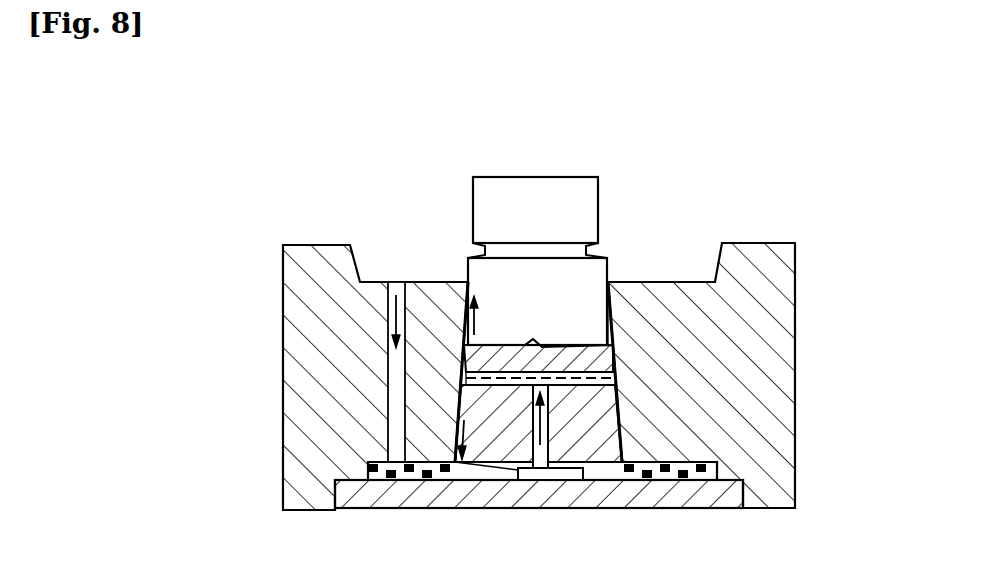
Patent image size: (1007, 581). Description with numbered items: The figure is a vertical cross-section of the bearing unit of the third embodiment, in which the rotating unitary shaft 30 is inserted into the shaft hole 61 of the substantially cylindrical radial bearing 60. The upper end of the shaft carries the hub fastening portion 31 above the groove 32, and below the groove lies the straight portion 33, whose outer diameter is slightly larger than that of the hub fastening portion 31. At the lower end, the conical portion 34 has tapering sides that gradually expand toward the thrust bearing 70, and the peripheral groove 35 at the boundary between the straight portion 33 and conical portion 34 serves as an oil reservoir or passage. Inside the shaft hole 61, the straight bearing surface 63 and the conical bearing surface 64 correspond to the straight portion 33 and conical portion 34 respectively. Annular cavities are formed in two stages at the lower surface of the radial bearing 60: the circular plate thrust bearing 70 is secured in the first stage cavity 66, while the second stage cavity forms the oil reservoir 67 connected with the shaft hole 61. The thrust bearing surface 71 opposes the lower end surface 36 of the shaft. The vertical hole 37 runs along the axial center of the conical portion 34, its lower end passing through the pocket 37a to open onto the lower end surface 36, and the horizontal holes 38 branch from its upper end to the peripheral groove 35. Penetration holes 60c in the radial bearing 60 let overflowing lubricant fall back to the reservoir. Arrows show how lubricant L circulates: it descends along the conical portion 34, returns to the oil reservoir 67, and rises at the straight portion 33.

The rotating unitary shaft 30 is at (587, 276).
The hub fastening portion 31 is at (585, 208).
The groove 32 is at (478, 248).
The straight portion 33 is at (612, 300).
The conical portion 34 is at (625, 440).
The peripheral groove 35 is at (478, 352).
The lower end surface 36 is at (505, 478).
The vertical hole 37 is at (470, 445).
The pocket 37a is at (548, 480).
The horizontal hole 38 is at (480, 378).
The radial bearing 60 is at (690, 410).
The penetration hole 60c is at (388, 320).
The shaft hole 61 is at (480, 345).
The straight bearing surface 63 is at (583, 341).
The conical bearing surface 64 is at (602, 393).
The first stage cavity 66 is at (352, 480).
The oil reservoir 67 is at (443, 478).
The thrust bearing 70 is at (633, 500).
The thrust bearing surface 71 is at (578, 468).
The lubricant L is at (680, 505).